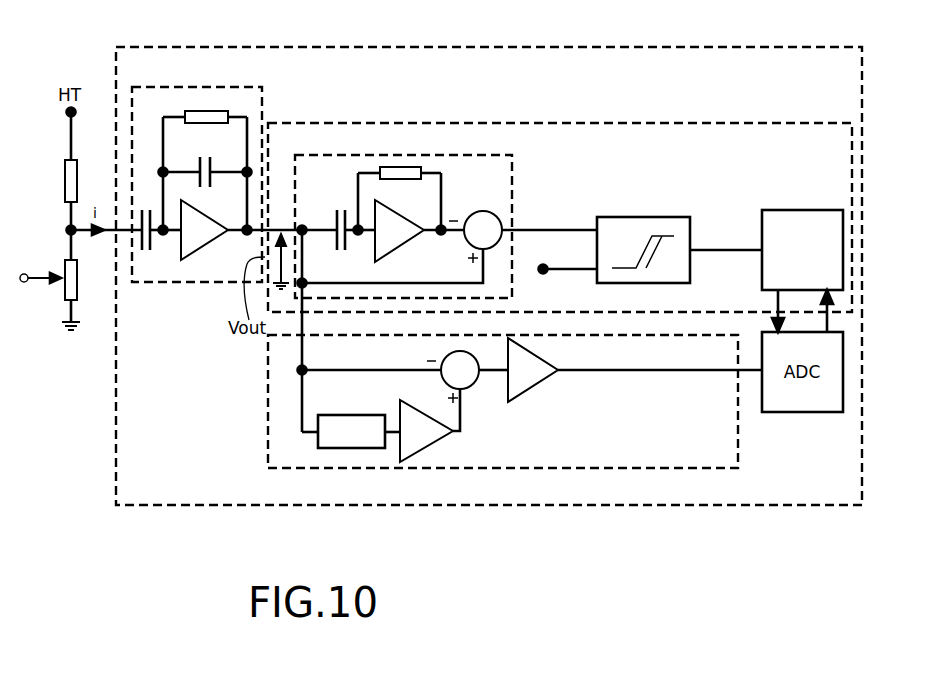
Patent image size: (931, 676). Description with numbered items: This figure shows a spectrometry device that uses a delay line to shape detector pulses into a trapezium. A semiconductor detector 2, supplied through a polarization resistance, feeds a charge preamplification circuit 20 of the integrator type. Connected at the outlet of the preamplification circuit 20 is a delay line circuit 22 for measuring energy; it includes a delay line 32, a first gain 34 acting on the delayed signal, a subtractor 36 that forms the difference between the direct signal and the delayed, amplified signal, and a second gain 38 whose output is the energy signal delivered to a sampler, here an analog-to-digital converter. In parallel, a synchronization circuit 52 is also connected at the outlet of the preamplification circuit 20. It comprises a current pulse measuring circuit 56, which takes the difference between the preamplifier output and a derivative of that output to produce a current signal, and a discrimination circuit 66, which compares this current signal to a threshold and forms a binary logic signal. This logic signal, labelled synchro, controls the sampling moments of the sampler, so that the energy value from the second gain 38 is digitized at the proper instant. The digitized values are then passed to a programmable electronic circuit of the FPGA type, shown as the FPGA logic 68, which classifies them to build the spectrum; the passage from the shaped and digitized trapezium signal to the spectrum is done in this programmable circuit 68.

The semiconductor detector 2 is at (63, 293).
The charge preamplification circuit 20 is at (245, 87).
The delay line circuit 22 is at (674, 468).
The delay line 32 is at (363, 448).
The first gain 34 is at (423, 447).
The subtractor 36 is at (468, 388).
The second gain 38 is at (540, 383).
The synchronization circuit 52 is at (662, 123).
The current pulse measuring circuit 56 is at (512, 193).
The discrimination circuit 66 is at (640, 217).
The FPGA logic 68 is at (800, 210).